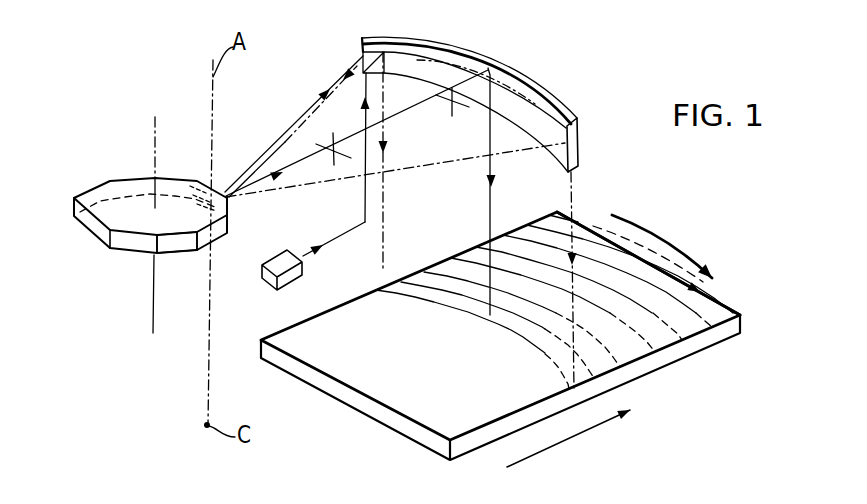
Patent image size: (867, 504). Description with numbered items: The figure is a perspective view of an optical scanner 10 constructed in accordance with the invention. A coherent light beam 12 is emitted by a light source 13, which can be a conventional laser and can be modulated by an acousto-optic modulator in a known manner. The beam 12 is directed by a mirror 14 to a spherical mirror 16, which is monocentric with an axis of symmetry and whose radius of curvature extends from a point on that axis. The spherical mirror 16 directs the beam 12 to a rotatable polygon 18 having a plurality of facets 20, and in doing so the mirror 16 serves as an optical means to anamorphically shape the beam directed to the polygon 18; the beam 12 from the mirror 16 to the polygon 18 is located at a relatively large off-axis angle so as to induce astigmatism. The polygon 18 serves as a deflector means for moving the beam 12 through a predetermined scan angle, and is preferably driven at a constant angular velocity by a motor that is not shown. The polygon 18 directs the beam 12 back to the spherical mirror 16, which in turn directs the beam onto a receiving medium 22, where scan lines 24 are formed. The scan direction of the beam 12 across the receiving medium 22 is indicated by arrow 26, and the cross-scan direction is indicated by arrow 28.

The optical scanner 10 is at (148, 72).
The coherent light beam 12 is at (341, 234).
The light source 13 is at (267, 285).
The mirror 14 is at (368, 226).
The spherical mirror 16 is at (360, 50).
The rotatable polygon 18 is at (93, 182).
The facets 20 is at (180, 247).
The receiving medium 22 is at (703, 343).
The scan lines 24 is at (715, 300).
The arrow 26 is at (685, 261).
The arrow 28 is at (592, 433).